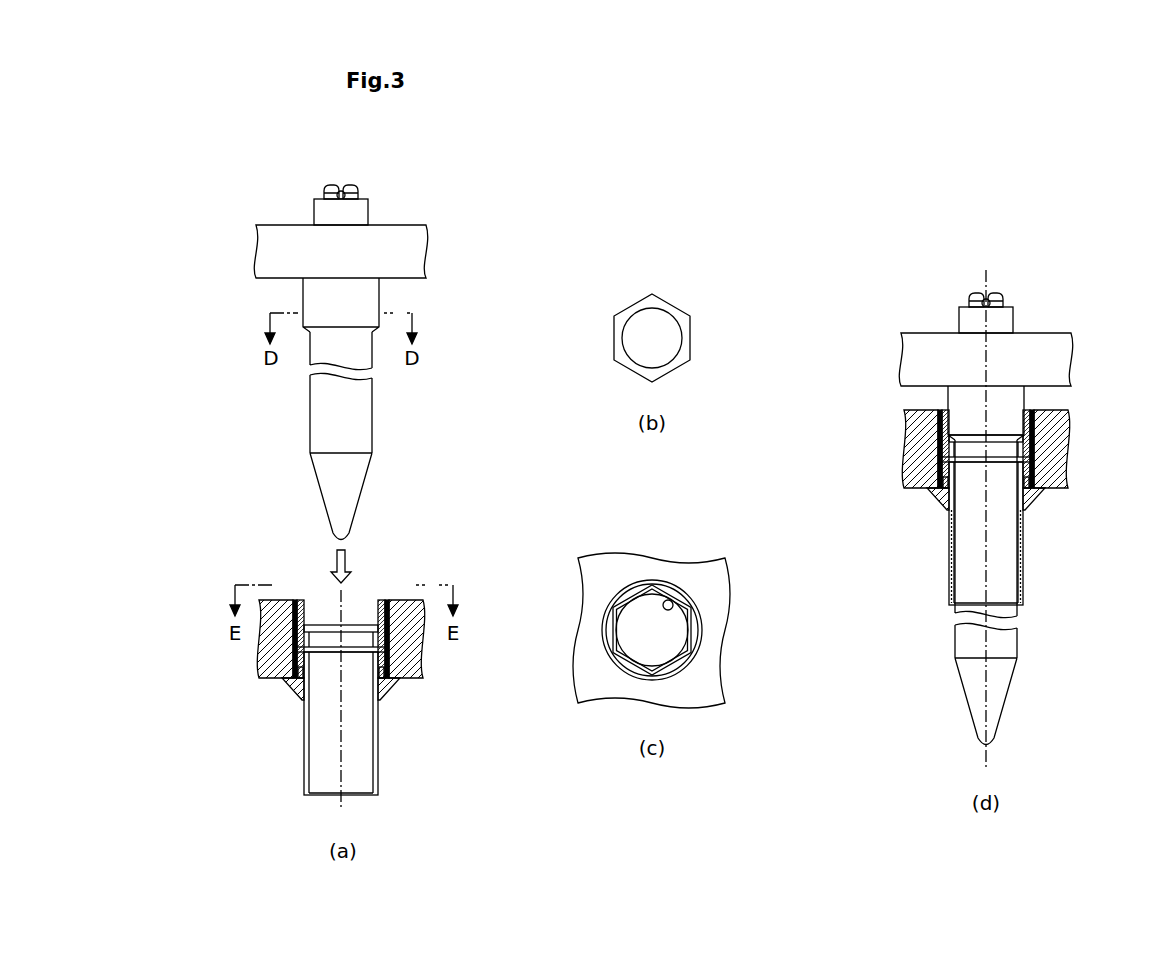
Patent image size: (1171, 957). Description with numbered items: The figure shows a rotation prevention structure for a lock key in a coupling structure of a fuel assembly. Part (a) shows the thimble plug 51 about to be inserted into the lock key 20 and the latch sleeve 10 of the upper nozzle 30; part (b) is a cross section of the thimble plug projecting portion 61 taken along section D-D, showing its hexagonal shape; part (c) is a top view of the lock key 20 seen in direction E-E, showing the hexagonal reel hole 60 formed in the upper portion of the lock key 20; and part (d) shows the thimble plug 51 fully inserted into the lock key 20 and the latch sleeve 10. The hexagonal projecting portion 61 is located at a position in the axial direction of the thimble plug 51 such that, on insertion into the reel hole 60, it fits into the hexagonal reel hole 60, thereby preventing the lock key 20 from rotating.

The latch sleeve 10 is at (288, 767).
The lock key 20 is at (380, 600).
The upper nozzle 30 is at (402, 600).
The thimble plug 51 is at (290, 426).
The hexagonal reel hole 60 is at (311, 600).
The hexagonal projecting portion 61 is at (368, 298).